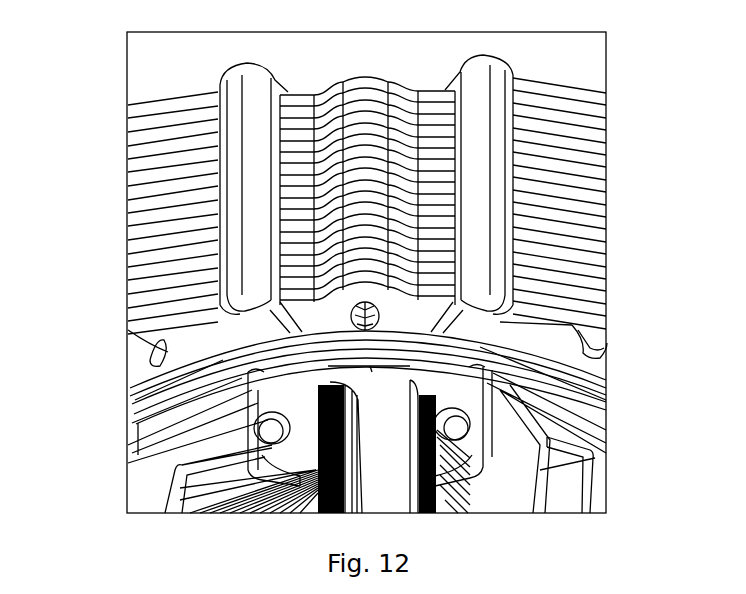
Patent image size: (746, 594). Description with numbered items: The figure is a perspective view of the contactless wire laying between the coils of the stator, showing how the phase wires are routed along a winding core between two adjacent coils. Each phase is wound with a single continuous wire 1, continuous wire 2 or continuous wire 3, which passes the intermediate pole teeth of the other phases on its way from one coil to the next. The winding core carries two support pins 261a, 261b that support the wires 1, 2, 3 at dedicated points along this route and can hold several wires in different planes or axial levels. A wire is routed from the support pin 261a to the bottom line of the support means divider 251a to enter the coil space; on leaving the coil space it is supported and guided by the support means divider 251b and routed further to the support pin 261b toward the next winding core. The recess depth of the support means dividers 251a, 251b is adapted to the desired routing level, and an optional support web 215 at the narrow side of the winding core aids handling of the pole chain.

The support web 215 is at (497, 172).
The continuous wire 1 is at (222, 360).
The continuous wire 2 is at (211, 385).
The continuous wire 3 is at (542, 393).
The support pin 261a is at (457, 428).
The support pin 261b is at (270, 431).
The support means divider 251a is at (567, 443).
The support means divider 251b is at (212, 458).